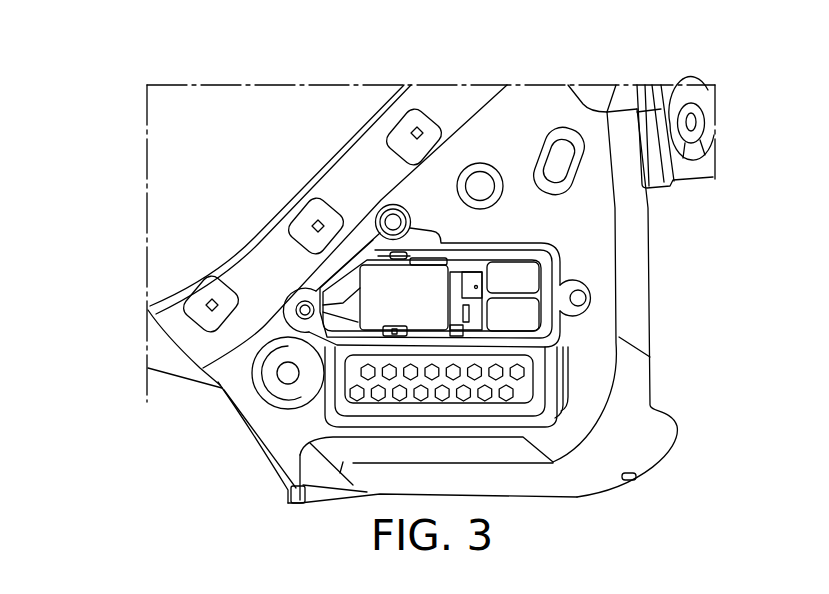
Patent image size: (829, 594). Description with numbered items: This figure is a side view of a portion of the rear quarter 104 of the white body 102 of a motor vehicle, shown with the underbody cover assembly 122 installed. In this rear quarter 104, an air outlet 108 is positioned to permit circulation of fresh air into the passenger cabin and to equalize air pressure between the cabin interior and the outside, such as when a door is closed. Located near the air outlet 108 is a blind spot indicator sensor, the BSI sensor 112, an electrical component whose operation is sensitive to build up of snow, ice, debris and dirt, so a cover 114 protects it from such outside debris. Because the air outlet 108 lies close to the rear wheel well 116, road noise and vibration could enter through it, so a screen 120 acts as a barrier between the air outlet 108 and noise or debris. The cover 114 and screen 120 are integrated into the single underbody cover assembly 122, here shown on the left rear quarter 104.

The white body 102 is at (297, 104).
The rear quarter 104 is at (141, 359).
The air outlet 108 is at (412, 368).
The BSI sensor 112 is at (430, 285).
The cover 114 is at (568, 280).
The rear wheel well 116 is at (193, 402).
The screen 120 is at (527, 394).
The underbody cover assembly 122 is at (584, 328).